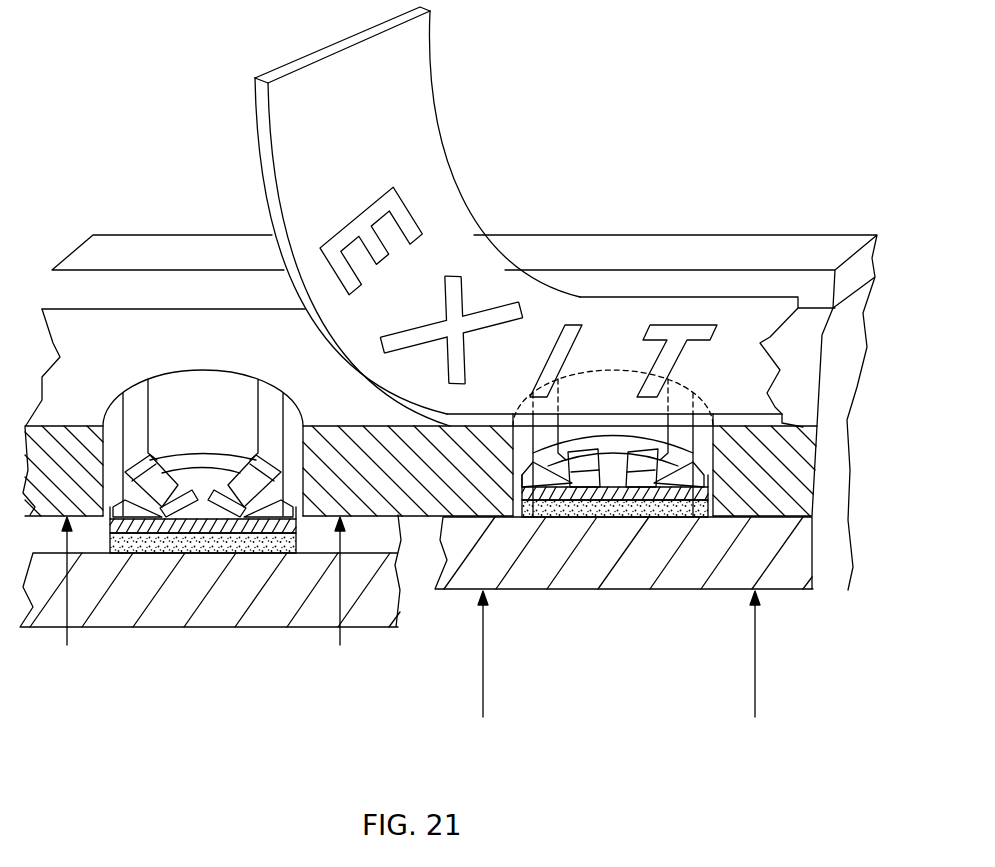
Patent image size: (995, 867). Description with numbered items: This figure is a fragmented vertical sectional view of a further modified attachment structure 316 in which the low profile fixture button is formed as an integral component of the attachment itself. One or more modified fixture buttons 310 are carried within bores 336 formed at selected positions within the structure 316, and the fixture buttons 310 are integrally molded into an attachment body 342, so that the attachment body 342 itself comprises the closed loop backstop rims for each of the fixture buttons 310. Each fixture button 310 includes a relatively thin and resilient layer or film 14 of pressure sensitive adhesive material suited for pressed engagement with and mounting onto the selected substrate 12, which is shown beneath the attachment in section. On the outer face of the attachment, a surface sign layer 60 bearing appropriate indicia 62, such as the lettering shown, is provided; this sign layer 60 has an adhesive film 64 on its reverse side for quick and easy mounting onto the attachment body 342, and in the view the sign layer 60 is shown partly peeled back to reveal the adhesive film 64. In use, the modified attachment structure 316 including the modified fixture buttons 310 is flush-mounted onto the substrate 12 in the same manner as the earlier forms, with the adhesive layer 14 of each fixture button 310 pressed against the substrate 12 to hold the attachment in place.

The substrate 12 is at (797, 589).
The adhesive layer 14 is at (191, 547).
The surface sign layer 60 is at (407, 108).
The indicia 62 is at (427, 227).
The adhesive film 64 is at (252, 152).
The fixture button 310 is at (163, 450).
The attachment structure 316 is at (612, 235).
The bore 336 is at (228, 375).
The attachment body 342 is at (425, 503).